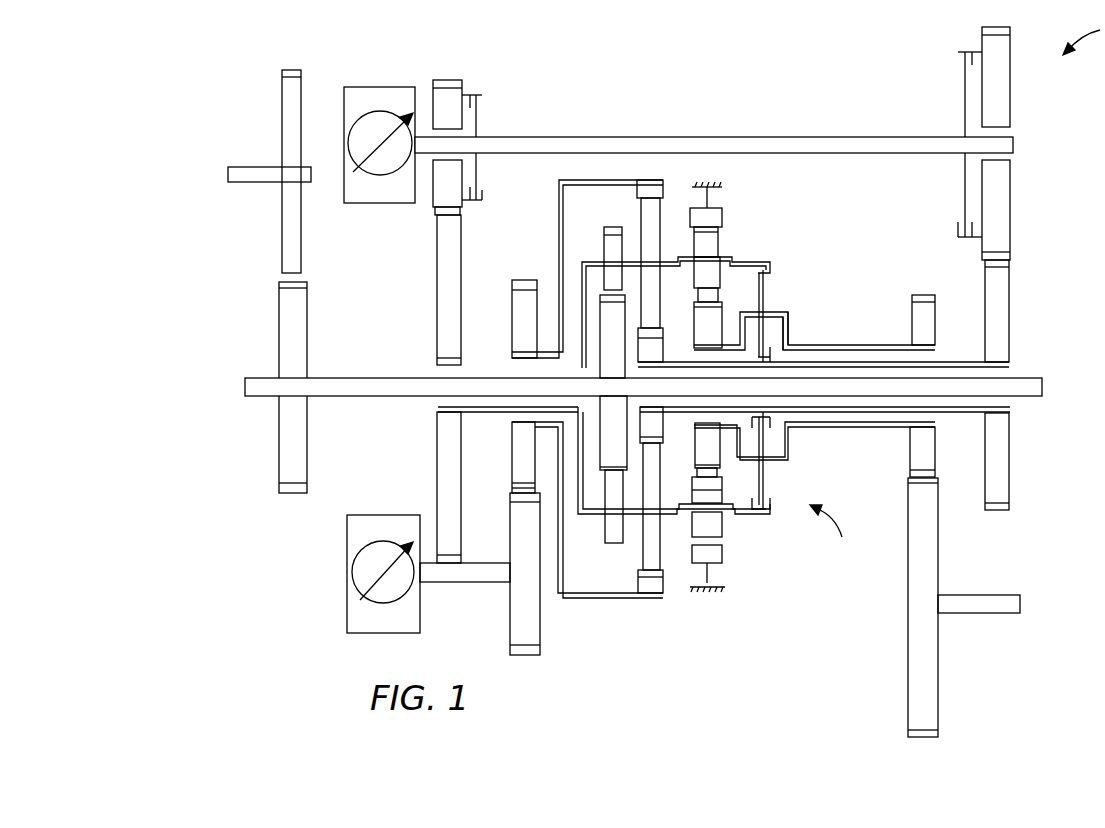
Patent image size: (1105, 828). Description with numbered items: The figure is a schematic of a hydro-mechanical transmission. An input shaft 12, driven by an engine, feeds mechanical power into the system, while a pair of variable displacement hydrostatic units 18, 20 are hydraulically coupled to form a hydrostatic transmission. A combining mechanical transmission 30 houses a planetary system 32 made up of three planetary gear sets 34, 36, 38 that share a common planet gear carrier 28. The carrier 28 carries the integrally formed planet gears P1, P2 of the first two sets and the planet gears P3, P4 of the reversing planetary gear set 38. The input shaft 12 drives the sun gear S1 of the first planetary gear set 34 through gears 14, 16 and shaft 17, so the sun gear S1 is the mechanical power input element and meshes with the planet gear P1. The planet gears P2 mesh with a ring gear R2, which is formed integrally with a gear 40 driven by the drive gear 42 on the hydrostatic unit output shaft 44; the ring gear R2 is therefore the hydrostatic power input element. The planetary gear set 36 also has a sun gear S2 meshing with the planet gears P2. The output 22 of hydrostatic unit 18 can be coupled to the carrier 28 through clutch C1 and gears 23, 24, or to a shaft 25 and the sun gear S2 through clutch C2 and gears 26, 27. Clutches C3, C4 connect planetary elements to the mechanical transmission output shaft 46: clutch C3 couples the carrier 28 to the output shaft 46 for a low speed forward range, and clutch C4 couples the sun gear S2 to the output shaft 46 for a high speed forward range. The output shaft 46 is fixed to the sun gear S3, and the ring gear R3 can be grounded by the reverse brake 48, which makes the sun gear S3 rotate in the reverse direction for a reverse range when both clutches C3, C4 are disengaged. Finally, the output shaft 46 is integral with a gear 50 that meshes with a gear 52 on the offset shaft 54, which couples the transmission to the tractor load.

The input shaft 12 is at (250, 167).
The gear 14 is at (282, 98).
The gear 16 is at (300, 328).
The shaft 17 is at (365, 378).
The hydrostatic unit 18 is at (370, 87).
The hydrostatic unit 20 is at (383, 515).
The output 22 is at (570, 137).
The gear 23 is at (440, 80).
The gear 24 is at (440, 295).
The shaft 25 is at (955, 413).
The gear 26 is at (1010, 80).
The gear 27 is at (1009, 303).
The planet gear carrier 28 is at (733, 262).
The combining mechanical transmission 30 is at (787, 617).
The planetary system 32 is at (832, 535).
The first planetary gear set 34 is at (628, 220).
The planetary gear set 36 is at (666, 166).
The reversing planetary gear set 38 is at (745, 166).
The gear 40 is at (517, 458).
The drive gear 42 is at (517, 522).
The hydrostatic unit output shaft 44 is at (467, 582).
The mechanical transmission output shaft 46 is at (865, 345).
The reverse brake 48 is at (718, 192).
The gear 50 is at (935, 322).
The gear 52 is at (938, 550).
The offset shaft 54 is at (995, 595).
The clutch C1 is at (482, 95).
The clutch C2 is at (958, 52).
The clutch C3 is at (772, 273).
The clutch C4 is at (785, 342).
The sun gear S1 is at (603, 320).
The sun gear S2 is at (655, 347).
The sun gear S3 is at (697, 298).
The planet gear P1 is at (607, 530).
The planet gear P2 is at (657, 487).
The planet gear P3 is at (720, 525).
The planet gear P4 is at (722, 302).
The ring gear R2 is at (663, 593).
The ring gear R3 is at (720, 555).